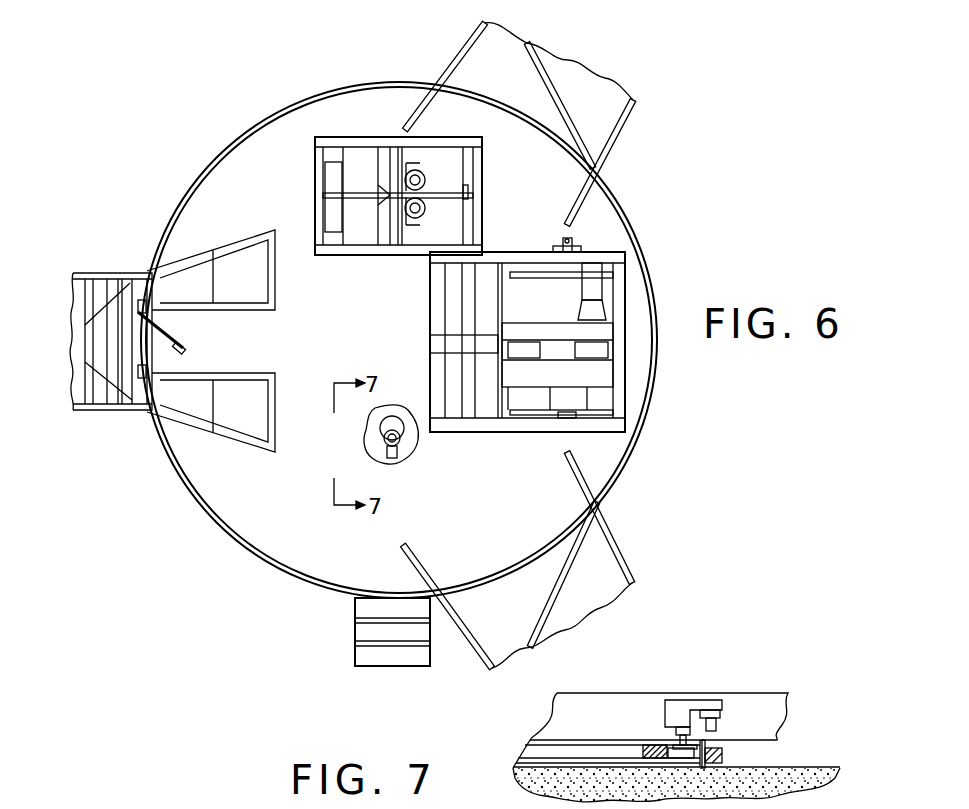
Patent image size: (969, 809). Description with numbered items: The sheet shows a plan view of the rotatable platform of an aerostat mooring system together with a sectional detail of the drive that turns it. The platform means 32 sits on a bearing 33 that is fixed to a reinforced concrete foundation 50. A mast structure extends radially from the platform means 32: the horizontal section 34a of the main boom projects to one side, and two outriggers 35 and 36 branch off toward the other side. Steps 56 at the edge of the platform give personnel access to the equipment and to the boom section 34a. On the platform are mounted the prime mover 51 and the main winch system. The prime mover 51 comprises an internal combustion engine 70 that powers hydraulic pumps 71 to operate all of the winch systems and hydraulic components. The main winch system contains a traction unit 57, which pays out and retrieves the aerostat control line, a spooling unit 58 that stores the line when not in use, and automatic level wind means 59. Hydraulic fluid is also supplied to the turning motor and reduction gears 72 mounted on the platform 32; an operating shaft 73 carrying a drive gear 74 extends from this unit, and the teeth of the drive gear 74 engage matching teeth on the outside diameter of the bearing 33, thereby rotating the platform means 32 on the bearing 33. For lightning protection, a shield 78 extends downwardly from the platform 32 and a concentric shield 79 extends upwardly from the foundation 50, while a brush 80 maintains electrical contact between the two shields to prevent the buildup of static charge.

In FIG. 6, the platform means 32 is at (572, 341).
In FIG. 7, the platform means 32 is at (738, 700).
In FIG. 6, the bearing 33 is at (398, 426).
In FIG. 7, the bearing 33 is at (537, 753).
In FIG. 6, the horizontal section of main boom 34a is at (98, 272).
In FIG. 6, the outrigger 35 is at (633, 108).
In FIG. 6, the outrigger 36 is at (624, 548).
In FIG. 7, the reinforced concrete foundation 50 is at (567, 777).
In FIG. 6, the prime mover 51 is at (396, 152).
In FIG. 6, the steps 56 is at (355, 652).
In FIG. 6, the traction unit 57 is at (598, 372).
In FIG. 6, the spooling unit 58 is at (555, 298).
In FIG. 6, the automatic level wind means 59 is at (462, 398).
In FIG. 6, the internal combustion engine 70 is at (387, 172).
In FIG. 6, the hydraulic pumps 71 is at (450, 165).
In FIG. 6, the turning motor and reduction gears 72 is at (400, 455).
In FIG. 7, the turning motor and reduction gears 72 is at (677, 708).
In FIG. 7, the operating shaft 73 is at (678, 742).
In FIG. 7, the drive gear 74 is at (682, 752).
In FIG. 7, the shield 78 is at (720, 738).
In FIG. 7, the shield 79 is at (696, 760).
In FIG. 7, the brush 80 is at (725, 755).